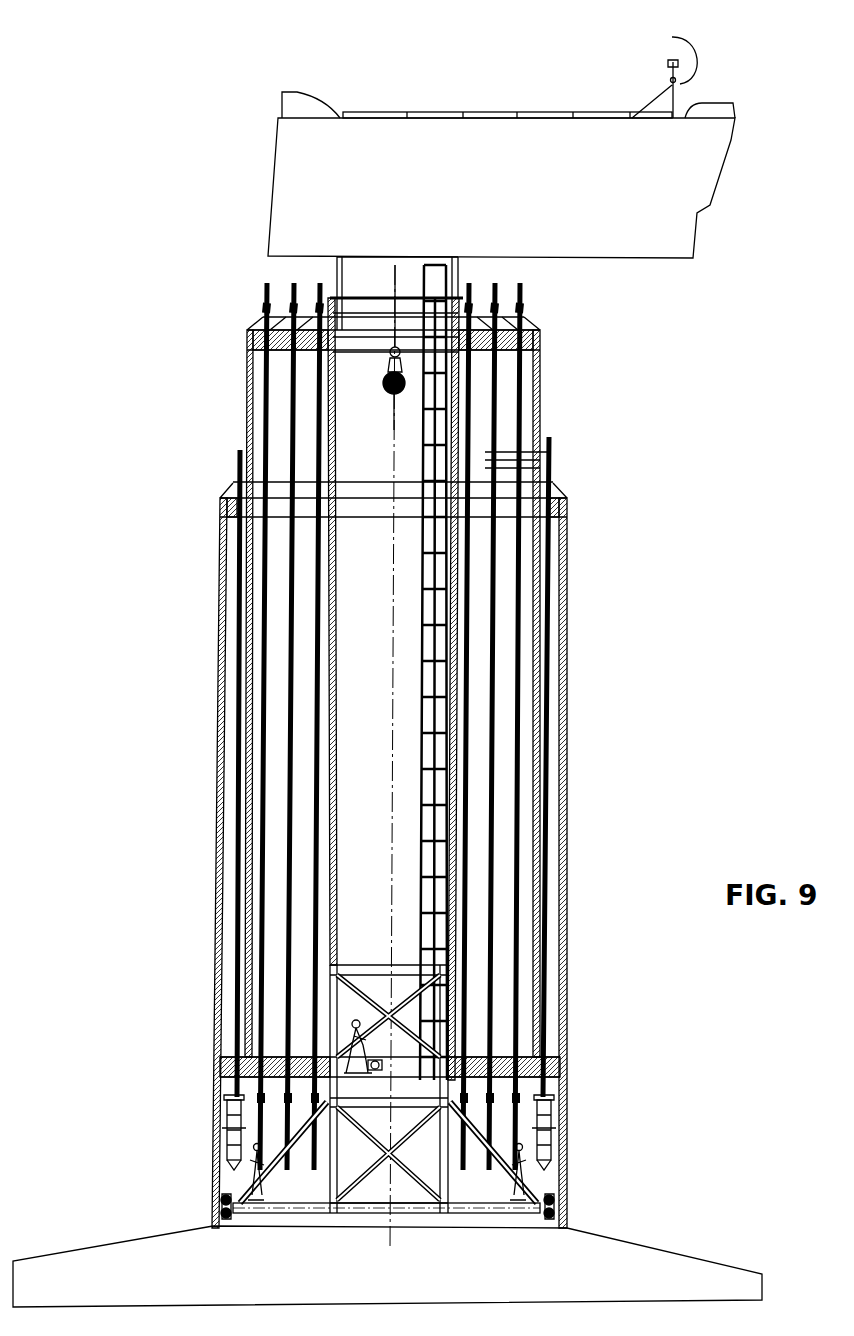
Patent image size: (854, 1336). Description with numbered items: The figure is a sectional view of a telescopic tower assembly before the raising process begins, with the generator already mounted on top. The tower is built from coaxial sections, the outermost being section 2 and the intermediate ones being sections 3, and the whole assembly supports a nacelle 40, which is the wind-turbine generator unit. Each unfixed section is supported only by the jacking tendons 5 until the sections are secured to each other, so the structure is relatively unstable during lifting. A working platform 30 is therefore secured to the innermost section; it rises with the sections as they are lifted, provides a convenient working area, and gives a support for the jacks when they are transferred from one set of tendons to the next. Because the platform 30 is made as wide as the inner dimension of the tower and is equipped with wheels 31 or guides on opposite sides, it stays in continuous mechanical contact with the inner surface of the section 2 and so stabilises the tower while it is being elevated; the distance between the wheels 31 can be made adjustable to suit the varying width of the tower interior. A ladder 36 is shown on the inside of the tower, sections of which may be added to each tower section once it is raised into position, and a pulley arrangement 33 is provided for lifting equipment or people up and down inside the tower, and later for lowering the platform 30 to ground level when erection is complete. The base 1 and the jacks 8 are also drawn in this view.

The foundation base 1 is at (709, 1278).
The section 2 is at (567, 922).
The section 3 is at (660, 411).
The jacking tendons 5 is at (600, 455).
The jacks 8 is at (555, 1118).
The working platform 30 is at (482, 1208).
The wheels 31 is at (567, 1202).
The pulley arrangement 33 is at (405, 377).
The ladder 36 is at (445, 678).
The nacelle 40 is at (565, 138).